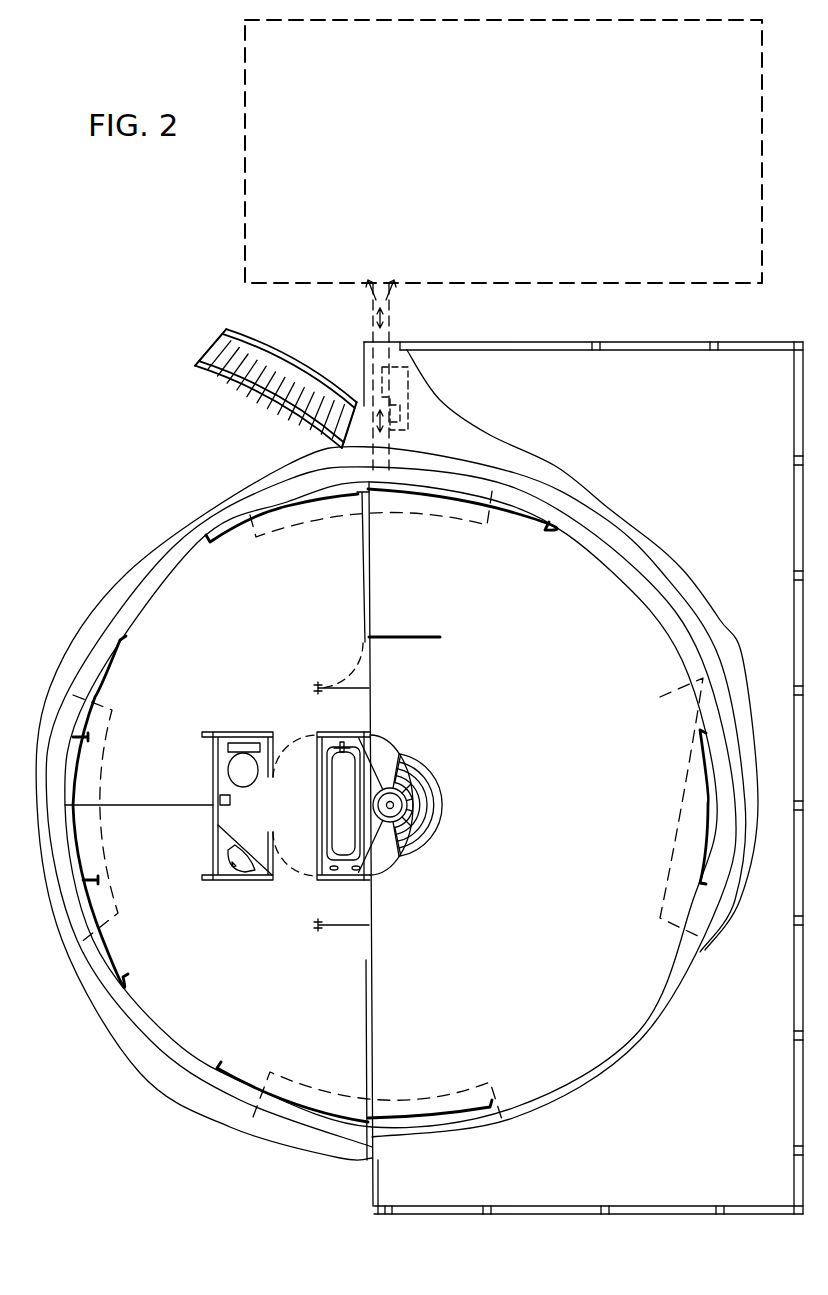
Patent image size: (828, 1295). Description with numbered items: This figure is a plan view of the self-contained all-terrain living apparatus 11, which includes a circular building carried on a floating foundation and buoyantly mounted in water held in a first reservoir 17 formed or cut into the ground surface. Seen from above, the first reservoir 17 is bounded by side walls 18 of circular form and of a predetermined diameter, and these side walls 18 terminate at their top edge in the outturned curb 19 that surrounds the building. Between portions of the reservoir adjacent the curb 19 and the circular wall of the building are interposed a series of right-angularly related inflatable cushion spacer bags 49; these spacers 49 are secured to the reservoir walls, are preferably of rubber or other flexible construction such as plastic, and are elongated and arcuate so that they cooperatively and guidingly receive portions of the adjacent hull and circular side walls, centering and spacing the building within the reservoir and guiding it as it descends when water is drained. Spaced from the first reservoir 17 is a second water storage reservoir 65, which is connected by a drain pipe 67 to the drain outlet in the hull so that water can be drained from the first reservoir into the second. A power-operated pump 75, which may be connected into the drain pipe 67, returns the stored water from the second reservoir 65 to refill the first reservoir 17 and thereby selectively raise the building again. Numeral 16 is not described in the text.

The self-contained all-terrain living apparatus 11 is at (214, 551).
The inner wall 16 is at (178, 556).
The first reservoir 17 is at (124, 582).
The side walls 18 is at (106, 614).
The outturned curb 19 is at (78, 636).
The inflatable cushion spacer bags 49 is at (260, 500).
The second water storage reservoir 65 is at (560, 194).
The drain pipe 67 is at (370, 312).
The power-operated pump 75 is at (409, 382).